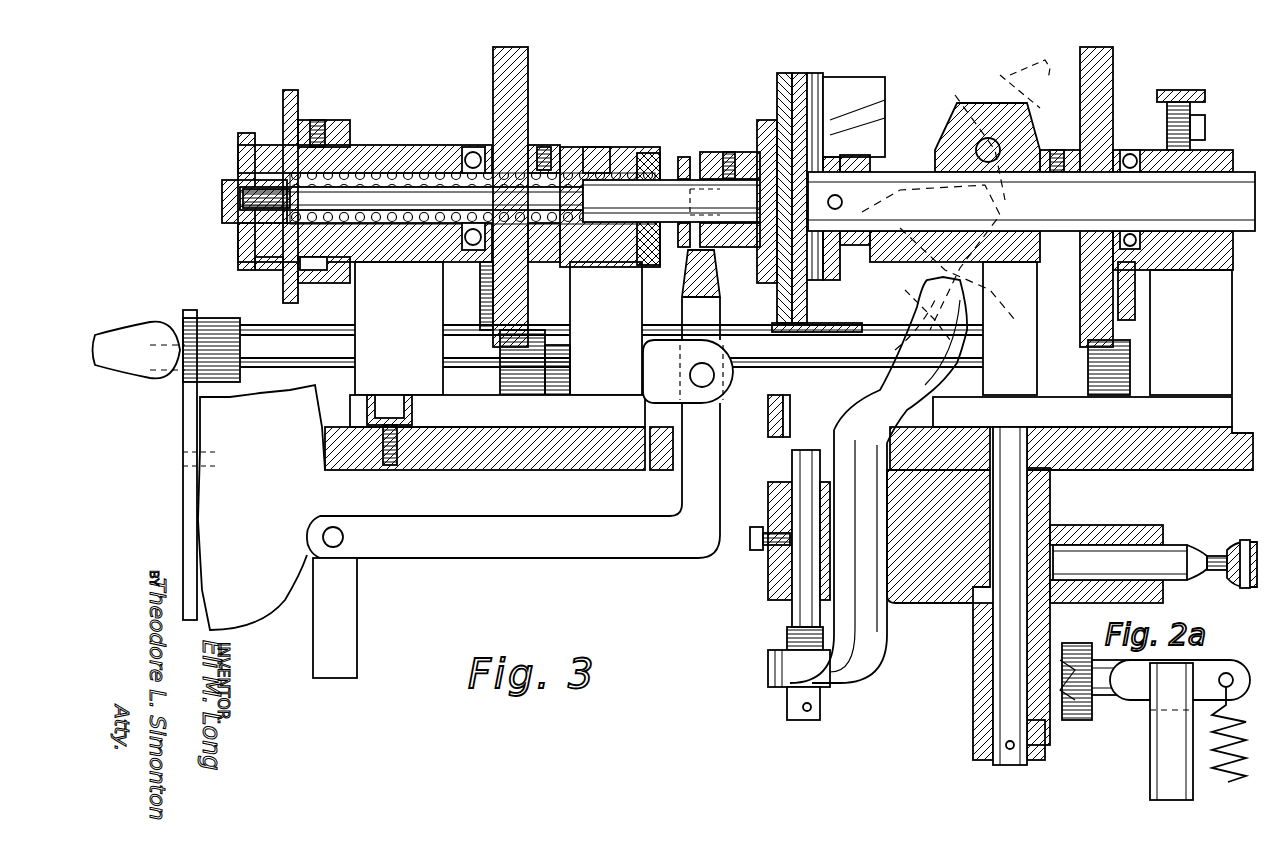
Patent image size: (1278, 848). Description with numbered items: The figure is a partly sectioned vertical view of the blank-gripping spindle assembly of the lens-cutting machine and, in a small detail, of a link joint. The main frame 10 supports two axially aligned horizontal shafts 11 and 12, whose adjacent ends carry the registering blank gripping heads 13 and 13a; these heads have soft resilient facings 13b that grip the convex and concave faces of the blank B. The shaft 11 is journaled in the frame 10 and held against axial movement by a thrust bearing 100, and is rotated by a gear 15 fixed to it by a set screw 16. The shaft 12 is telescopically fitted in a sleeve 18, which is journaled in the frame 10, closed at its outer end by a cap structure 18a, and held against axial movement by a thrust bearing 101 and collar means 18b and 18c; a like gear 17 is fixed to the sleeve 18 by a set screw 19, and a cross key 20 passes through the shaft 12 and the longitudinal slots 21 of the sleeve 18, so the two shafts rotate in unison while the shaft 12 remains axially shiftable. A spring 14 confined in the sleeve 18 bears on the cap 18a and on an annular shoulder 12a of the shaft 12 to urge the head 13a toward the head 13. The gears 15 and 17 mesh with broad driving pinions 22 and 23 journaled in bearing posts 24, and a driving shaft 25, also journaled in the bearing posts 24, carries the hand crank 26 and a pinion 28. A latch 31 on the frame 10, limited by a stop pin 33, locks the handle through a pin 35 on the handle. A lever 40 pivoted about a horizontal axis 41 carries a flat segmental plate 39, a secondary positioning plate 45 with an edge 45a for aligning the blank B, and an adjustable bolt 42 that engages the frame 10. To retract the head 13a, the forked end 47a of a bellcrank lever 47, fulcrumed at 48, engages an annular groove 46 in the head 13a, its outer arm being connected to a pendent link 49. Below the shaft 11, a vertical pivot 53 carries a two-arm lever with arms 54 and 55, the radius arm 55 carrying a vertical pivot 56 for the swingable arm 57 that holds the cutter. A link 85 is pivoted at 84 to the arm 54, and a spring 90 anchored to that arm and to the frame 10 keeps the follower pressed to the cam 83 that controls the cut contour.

In FIG. 3, the main frame 10 is at (360, 275).
In FIG. 3, the shaft 11 is at (1225, 172).
In FIG. 3, the shaft 12 is at (600, 145).
In FIG. 3, the annular shoulder 12a is at (671, 201).
In FIG. 3, the blank gripping head 13 is at (823, 130).
In FIG. 3, the blank gripping head 13a is at (765, 120).
In FIG. 3, the resilient facing 13b is at (826, 72).
In FIG. 3, the blank B is at (798, 73).
In FIG. 3, the spring 14 is at (440, 185).
In FIG. 3, the gear 15 is at (1110, 62).
In FIG. 3, the set screw 16 is at (1062, 150).
In FIG. 3, the gear 17 is at (530, 57).
In FIG. 3, the sleeve 18 is at (430, 240).
In FIG. 3, the cap structure 18a is at (225, 190).
In FIG. 3, the collar means 18b is at (340, 122).
In FIG. 3, the collar means 18c is at (684, 156).
In FIG. 3, the set screw 19 is at (545, 146).
In FIG. 3, the cross key 20 is at (645, 152).
In FIG. 3, the longitudinal slot 21 is at (612, 175).
In FIG. 3, the driving pinion 22 is at (1125, 276).
In FIG. 3, the driving pinion 23 is at (485, 290).
In FIG. 3, the bearing post 24 is at (512, 368).
In FIG. 3, the driving shaft 25 is at (300, 345).
In FIG. 3, the hand crank 26 is at (178, 315).
In FIG. 3, the pinion 28 is at (545, 400).
In FIG. 3, the latch 31 is at (183, 505).
In FIG. 3, the stop pin 33 is at (190, 480).
In FIG. 3, the pin 35 is at (170, 380).
In FIG. 3, the segmental plate 39 is at (845, 360).
In FIG. 3, the lever 40 is at (1040, 85).
In FIG. 3, the horizontal axis 41 is at (965, 118).
In FIG. 3, the bolt 42 is at (1180, 90).
In FIG. 3, the secondary positioning plate 45 is at (905, 230).
In FIG. 3, the edge 45a is at (890, 200).
In FIG. 3, the annular groove 46 is at (728, 152).
In FIG. 3, the bellcrank lever 47 is at (715, 310).
In FIG. 3, the forked end 47a is at (722, 202).
In FIG. 3, the fulcrum 48 is at (702, 387).
In FIG. 3, the pendent link 49 is at (357, 648).
In FIG. 3, the vertical pivot 53 is at (993, 758).
In FIG. 3, the arm 54 is at (1152, 548).
In FIG. 2a, the arm 54 is at (1080, 720).
In FIG. 3, the radius arm 55 is at (775, 575).
In FIG. 3, the vertical pivot 56 is at (800, 585).
In FIG. 3, the swingable arm 57 is at (822, 400).
In FIG. 3, the cam 83 is at (283, 108).
In FIG. 3, the pivot 84 is at (1245, 545).
In FIG. 2a, the pivot 84 is at (1170, 690).
In FIG. 3, the link 85 is at (1240, 585).
In FIG. 2a, the link 85 is at (1165, 775).
In FIG. 2a, the spring 90 is at (1224, 785).
In FIG. 3, the thrust bearing 100 is at (1130, 152).
In FIG. 3, the thrust bearing 101 is at (474, 150).